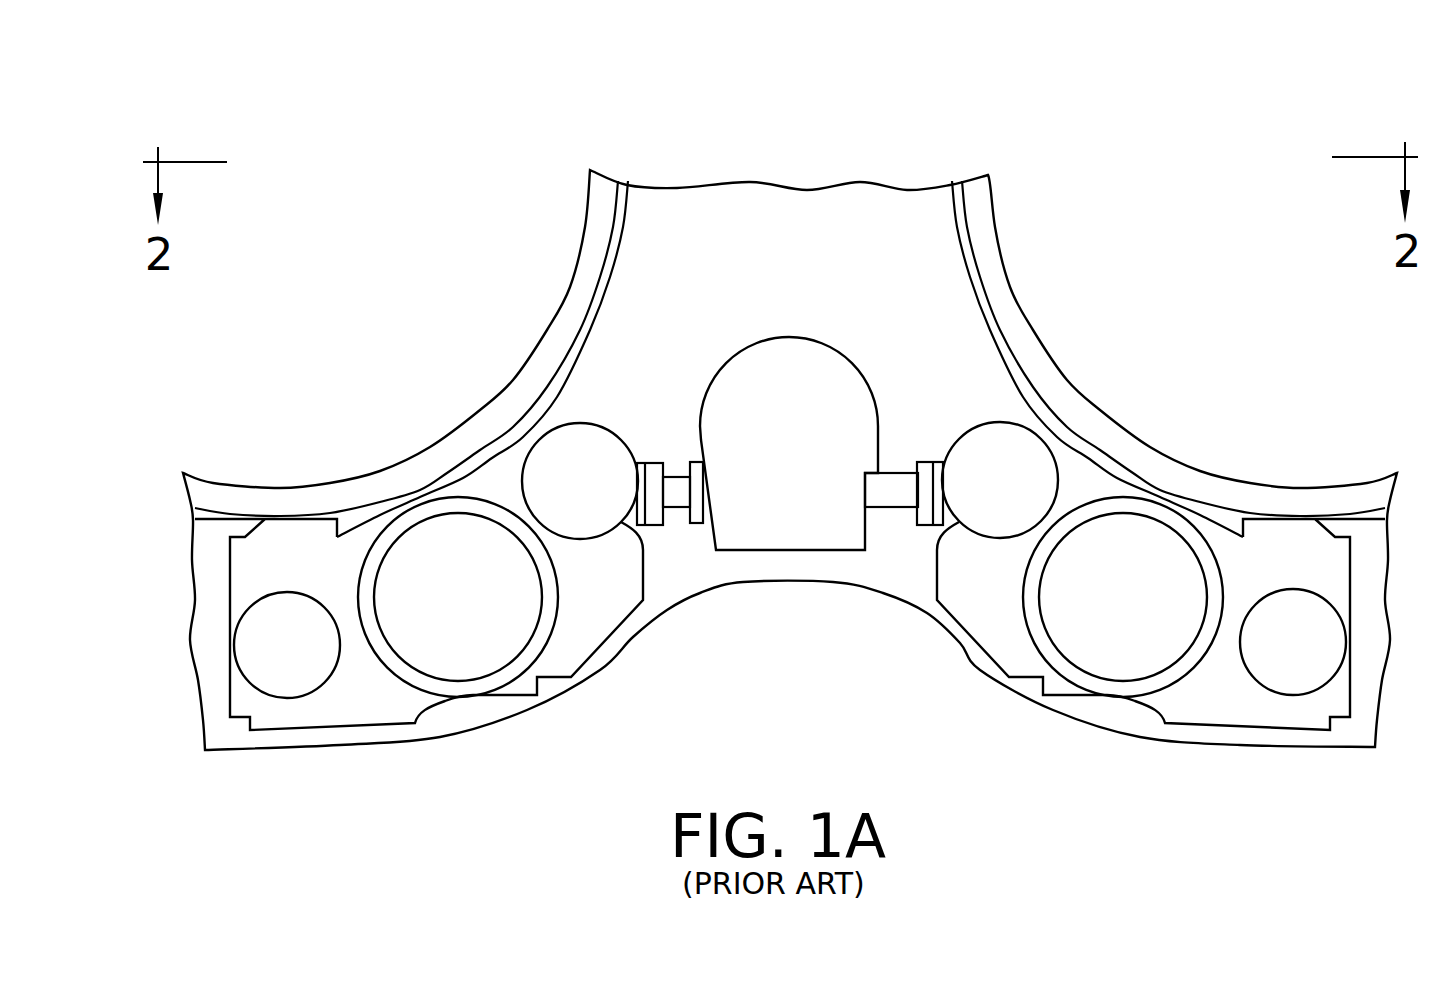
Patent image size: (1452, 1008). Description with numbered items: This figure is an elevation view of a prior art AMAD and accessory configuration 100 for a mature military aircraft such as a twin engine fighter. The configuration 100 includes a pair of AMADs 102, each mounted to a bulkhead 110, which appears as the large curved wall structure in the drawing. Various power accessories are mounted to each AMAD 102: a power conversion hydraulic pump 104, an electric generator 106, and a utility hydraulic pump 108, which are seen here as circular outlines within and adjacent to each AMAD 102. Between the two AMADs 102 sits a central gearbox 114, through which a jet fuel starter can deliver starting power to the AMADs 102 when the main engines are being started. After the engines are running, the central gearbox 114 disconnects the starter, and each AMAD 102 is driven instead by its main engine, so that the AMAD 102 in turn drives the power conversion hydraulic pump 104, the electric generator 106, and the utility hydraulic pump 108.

The AMAD and accessory configuration 100 is at (300, 98).
The AMAD 102 is at (298, 542).
The power conversion hydraulic pump 104 is at (262, 669).
The electric generator 106 is at (517, 620).
The utility hydraulic pump 108 is at (555, 448).
The bulkhead 110 is at (662, 300).
The central gearbox 114 is at (762, 446).